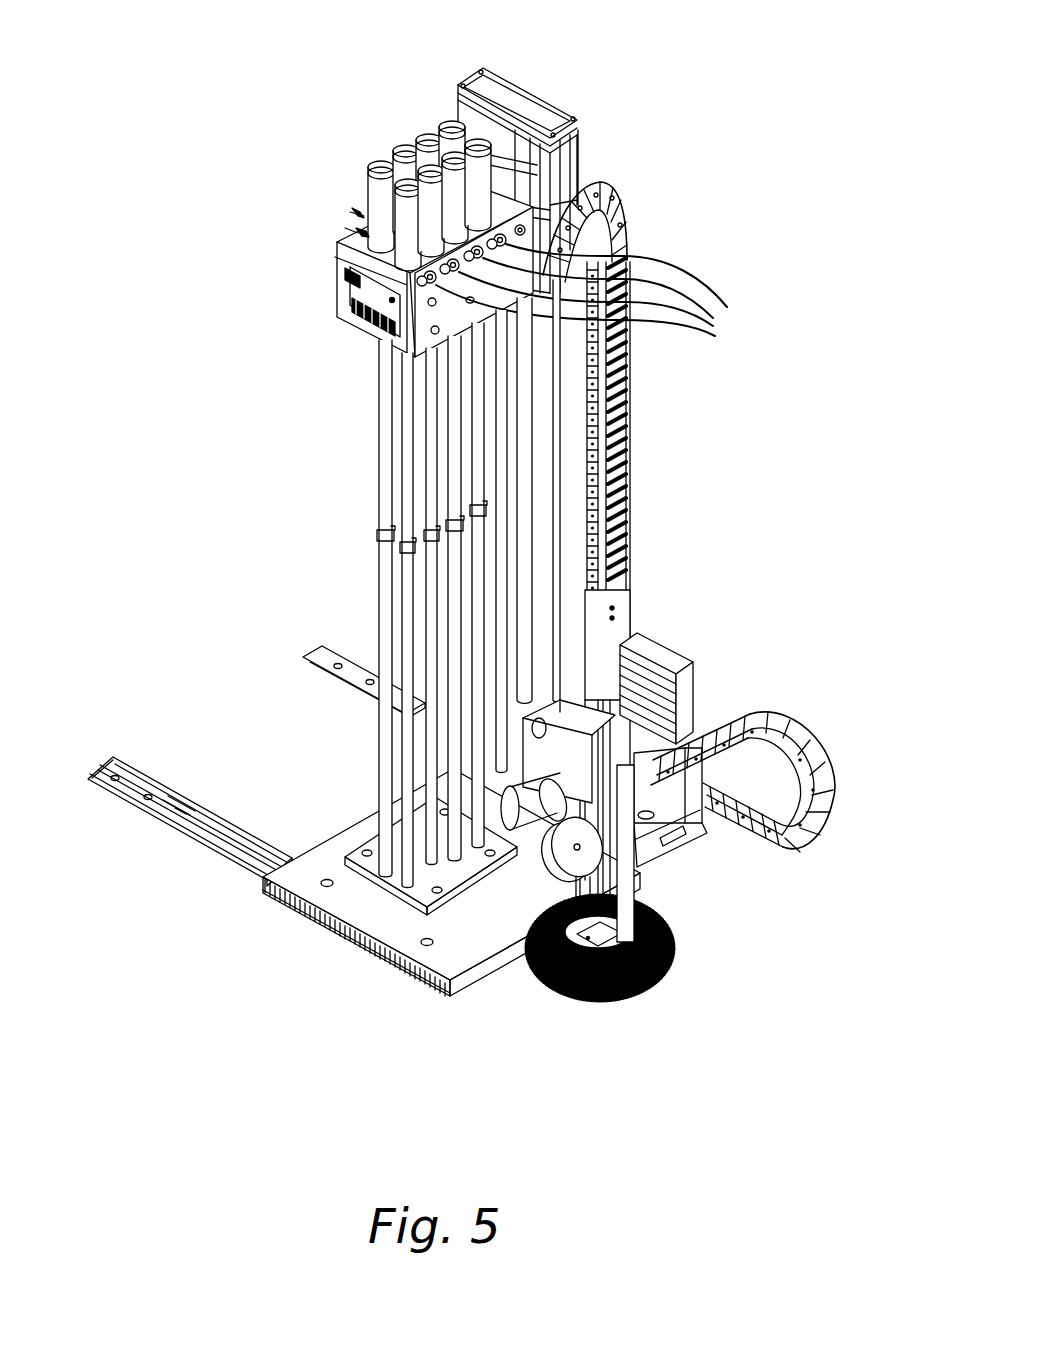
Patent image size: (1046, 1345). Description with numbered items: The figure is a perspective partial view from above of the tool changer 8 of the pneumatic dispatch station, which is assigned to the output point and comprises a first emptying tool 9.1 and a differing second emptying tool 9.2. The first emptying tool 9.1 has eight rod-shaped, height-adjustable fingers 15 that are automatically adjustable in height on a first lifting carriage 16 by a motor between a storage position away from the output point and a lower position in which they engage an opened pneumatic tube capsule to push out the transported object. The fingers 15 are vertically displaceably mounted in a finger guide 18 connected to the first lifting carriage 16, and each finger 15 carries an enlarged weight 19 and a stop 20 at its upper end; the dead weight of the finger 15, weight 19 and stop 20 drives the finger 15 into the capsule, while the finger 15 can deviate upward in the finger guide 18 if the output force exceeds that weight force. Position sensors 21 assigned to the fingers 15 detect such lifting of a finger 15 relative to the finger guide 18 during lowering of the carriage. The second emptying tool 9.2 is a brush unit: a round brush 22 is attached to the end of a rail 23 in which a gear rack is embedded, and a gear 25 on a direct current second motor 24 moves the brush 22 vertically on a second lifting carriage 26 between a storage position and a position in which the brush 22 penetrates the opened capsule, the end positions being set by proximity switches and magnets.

The tool changer 8 is at (723, 127).
The first emptying tool 9.1 is at (248, 263).
The second emptying tool 9.2 is at (630, 1013).
The finger 15 is at (432, 470).
The first lifting carriage 16 is at (585, 183).
The finger guide 18 is at (343, 300).
The weight 19 is at (382, 160).
The stop 20 is at (360, 233).
The position sensor 21 is at (604, 300).
The brush 22 is at (658, 982).
The rail 23 is at (618, 627).
The second motor 24 is at (515, 812).
The gear 25 is at (552, 874).
The second lifting carriage 26 is at (632, 852).